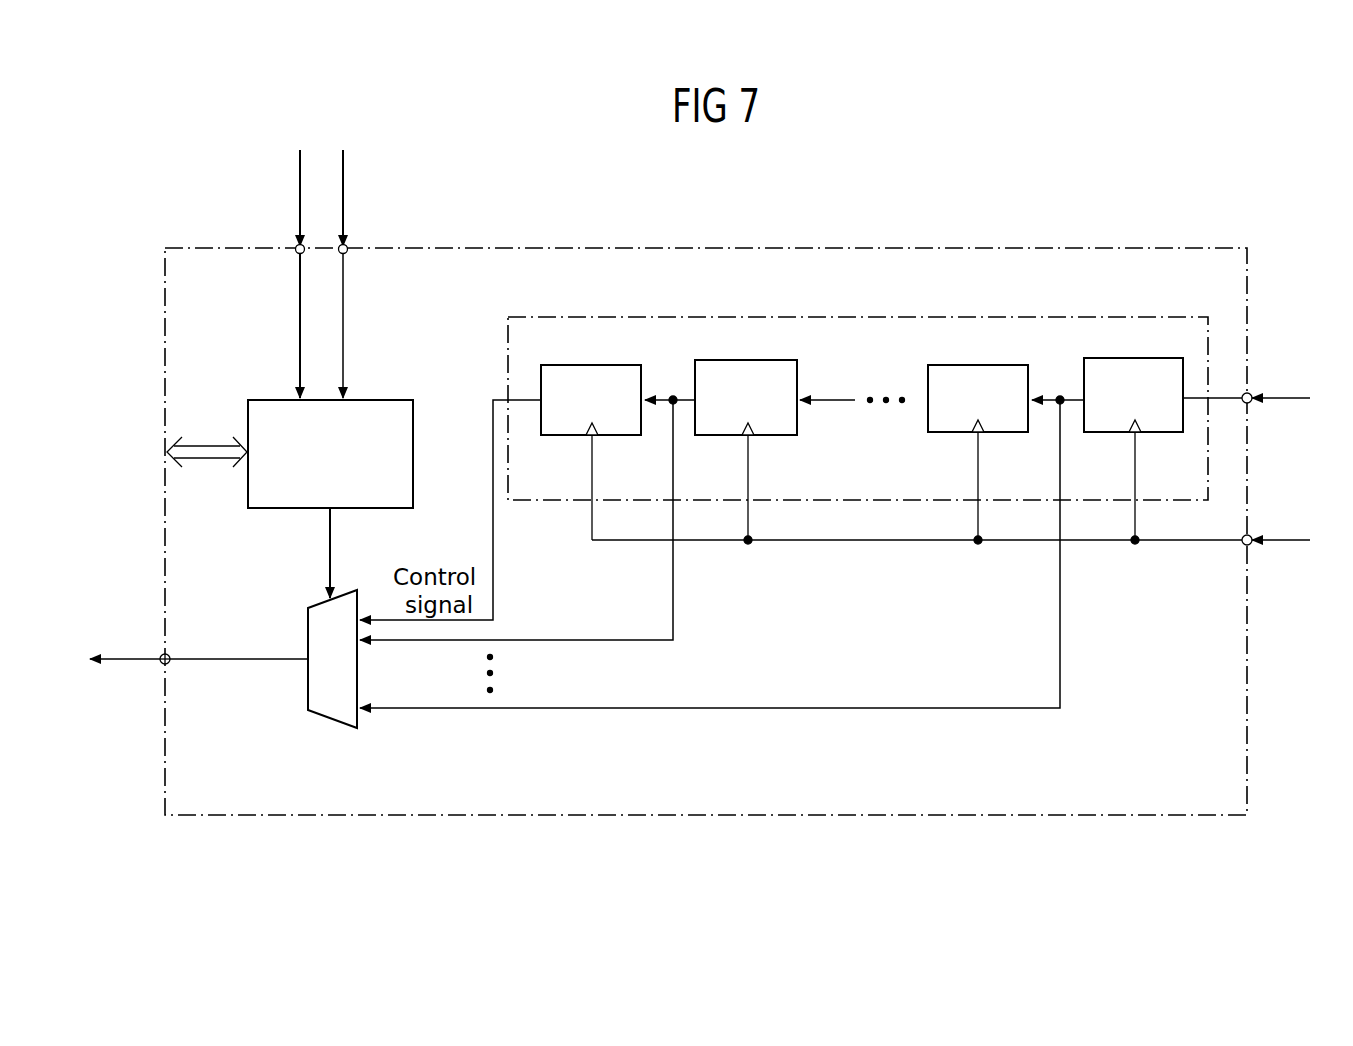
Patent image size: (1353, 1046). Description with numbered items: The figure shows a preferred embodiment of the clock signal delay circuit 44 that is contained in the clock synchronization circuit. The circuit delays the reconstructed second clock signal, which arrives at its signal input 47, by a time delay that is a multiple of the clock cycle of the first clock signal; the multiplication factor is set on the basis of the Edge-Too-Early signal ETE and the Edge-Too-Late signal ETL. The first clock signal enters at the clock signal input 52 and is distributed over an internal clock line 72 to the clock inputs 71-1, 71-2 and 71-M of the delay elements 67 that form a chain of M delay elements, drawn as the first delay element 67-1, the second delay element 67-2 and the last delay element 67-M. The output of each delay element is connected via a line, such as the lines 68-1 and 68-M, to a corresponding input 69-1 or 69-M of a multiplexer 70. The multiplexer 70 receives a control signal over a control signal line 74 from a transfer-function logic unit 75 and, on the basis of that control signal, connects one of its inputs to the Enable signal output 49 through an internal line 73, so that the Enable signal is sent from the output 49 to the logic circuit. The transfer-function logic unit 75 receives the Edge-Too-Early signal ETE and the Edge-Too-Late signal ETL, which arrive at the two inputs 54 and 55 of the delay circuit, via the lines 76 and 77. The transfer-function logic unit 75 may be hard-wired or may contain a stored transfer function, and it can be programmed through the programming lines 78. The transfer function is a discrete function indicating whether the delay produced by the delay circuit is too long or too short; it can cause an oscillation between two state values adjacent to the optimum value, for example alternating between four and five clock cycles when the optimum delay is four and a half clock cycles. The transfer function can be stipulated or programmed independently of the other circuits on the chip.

The clock signal delay circuit 44 is at (706, 531).
The signal input 47 is at (1253, 402).
The output 49 is at (161, 665).
The clock signal input 52 is at (1253, 545).
The input 54 is at (297, 246).
The input 55 is at (346, 246).
The delay elements 67 is at (858, 408).
The delay element 67-1 is at (1107, 395).
The delay element 67-2 is at (978, 398).
The delay element 67-M is at (591, 400).
The line 68-1 is at (700, 712).
The line 68-M is at (495, 572).
The multiplexer input 69-1 is at (362, 724).
The multiplexer input 69-M is at (365, 612).
The multiplexer 70 is at (320, 720).
The clock input 71-1 is at (1140, 438).
The clock input 71-2 is at (973, 438).
The clock input 71-M is at (587, 440).
The internal clock line 72 is at (940, 545).
The internal line 73 is at (225, 655).
The control signal line 74 is at (328, 560).
The transfer-function logic unit 75 is at (415, 456).
The line 76 is at (298, 310).
The line 77 is at (346, 310).
The programming lines 78 is at (208, 462).